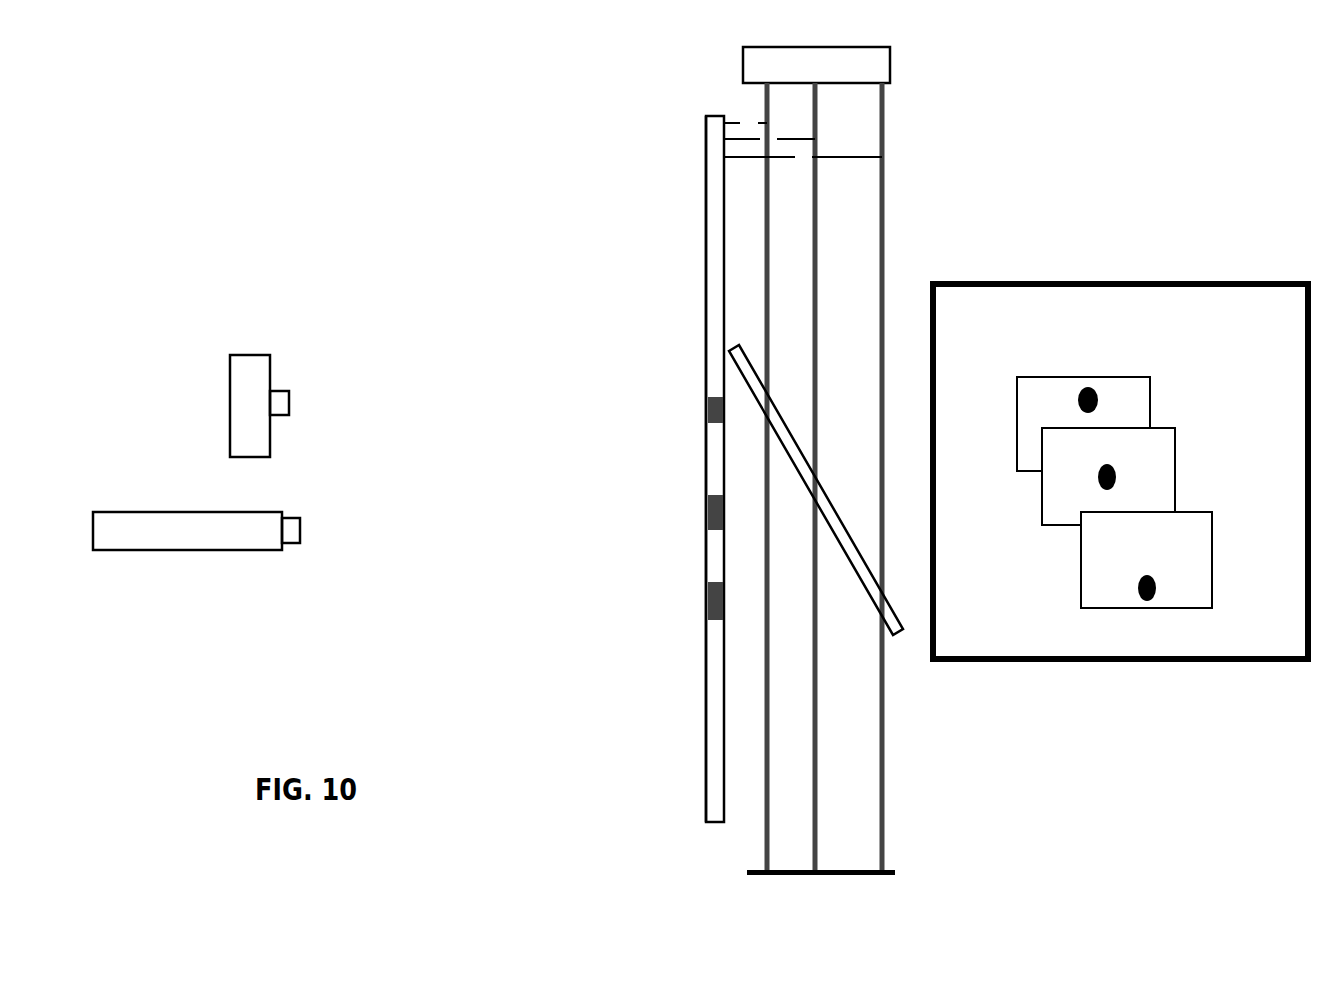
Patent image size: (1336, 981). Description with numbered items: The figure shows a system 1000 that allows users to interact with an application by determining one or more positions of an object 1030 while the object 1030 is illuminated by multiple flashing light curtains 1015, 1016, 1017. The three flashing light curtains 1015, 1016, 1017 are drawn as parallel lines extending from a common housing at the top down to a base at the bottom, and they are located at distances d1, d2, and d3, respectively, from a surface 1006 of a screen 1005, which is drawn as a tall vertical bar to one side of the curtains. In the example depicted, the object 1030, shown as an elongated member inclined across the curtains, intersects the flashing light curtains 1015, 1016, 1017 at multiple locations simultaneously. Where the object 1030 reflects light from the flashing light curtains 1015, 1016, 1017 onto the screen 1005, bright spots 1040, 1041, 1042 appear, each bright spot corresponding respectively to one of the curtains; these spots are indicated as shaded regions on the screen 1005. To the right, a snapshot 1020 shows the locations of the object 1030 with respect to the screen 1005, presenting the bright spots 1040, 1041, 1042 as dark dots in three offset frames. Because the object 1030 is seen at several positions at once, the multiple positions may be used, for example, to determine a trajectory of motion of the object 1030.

The system 1000 is at (573, 32).
The screen 1005 is at (720, 762).
The surface 1006 is at (718, 192).
The flashing light curtain 1015 is at (761, 848).
The flashing light curtain 1016 is at (814, 837).
The flashing light curtain 1017 is at (885, 825).
The snapshot 1020 is at (1118, 283).
The object 1030 is at (832, 497).
The bright spot 1040 is at (706, 602).
The bright spot 1041 is at (708, 512).
The bright spot 1042 is at (712, 415).